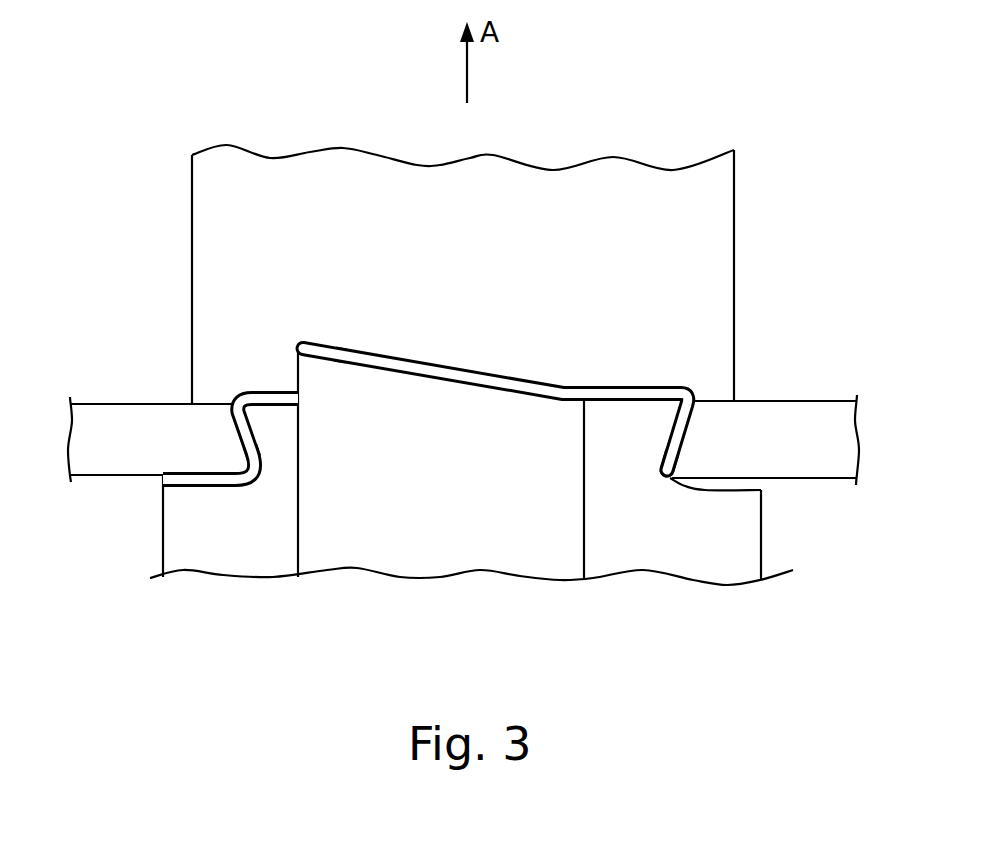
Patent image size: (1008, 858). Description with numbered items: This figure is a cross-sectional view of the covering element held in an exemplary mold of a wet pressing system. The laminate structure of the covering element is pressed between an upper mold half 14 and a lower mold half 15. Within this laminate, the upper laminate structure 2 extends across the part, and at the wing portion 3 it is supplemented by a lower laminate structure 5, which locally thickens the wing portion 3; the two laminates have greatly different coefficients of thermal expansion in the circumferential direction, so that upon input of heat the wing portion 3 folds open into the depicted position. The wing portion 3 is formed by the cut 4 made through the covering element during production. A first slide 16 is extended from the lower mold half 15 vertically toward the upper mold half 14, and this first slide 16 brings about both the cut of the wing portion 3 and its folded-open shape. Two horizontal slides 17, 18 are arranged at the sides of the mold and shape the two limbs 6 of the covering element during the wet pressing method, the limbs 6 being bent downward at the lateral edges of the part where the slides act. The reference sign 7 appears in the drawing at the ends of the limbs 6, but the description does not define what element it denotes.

The upper laminate structure 2 is at (461, 374).
The wing portion 3 is at (513, 387).
The cut 4 is at (297, 340).
The lower laminate structure 5 is at (423, 367).
The limbs 6 is at (238, 422).
The hook end 7 is at (217, 473).
The upper mold half 14 is at (423, 197).
The lower mold half 15 is at (618, 550).
The first slide 16 is at (443, 542).
The horizontal slide 17 is at (123, 417).
The horizontal slide 18 is at (813, 410).